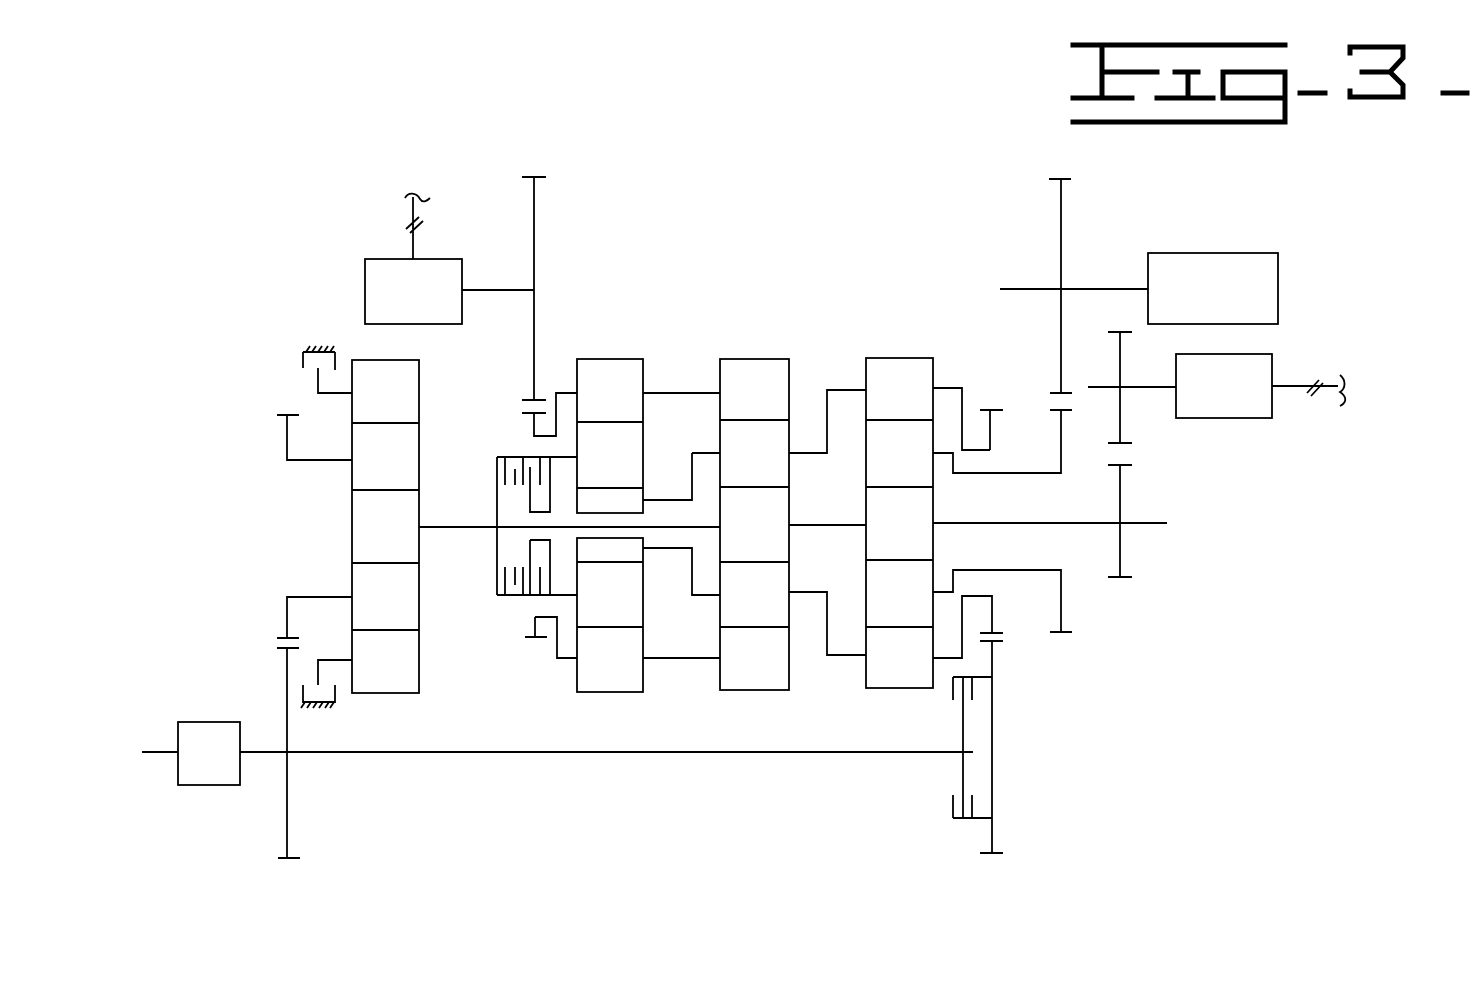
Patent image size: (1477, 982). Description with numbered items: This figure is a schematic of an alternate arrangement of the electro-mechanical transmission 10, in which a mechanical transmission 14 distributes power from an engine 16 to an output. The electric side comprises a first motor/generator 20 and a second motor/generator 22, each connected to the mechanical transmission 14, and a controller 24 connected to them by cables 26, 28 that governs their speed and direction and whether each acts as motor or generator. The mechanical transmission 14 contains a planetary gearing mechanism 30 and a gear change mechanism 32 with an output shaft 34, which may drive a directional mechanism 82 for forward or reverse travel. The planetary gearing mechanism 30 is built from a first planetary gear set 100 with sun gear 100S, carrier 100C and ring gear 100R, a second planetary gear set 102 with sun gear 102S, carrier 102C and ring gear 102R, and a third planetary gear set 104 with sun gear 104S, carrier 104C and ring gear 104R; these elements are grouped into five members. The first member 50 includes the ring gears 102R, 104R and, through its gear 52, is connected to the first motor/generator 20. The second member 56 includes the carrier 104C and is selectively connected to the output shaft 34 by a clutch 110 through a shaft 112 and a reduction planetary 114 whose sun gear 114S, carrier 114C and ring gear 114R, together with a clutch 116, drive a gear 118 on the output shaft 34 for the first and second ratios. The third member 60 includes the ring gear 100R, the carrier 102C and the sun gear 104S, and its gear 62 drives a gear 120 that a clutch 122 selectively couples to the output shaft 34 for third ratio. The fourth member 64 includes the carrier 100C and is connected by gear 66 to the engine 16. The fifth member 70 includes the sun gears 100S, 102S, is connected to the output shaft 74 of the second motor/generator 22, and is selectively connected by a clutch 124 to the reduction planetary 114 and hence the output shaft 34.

The electro-mechanical transmission 10 is at (311, 524).
The mechanical transmission 14 is at (690, 821).
The engine 16 is at (1210, 253).
The first motor/generator 20 is at (368, 259).
The second motor/generator 22 is at (1245, 418).
The controller 24 is at (520, 290).
The cable 26 is at (422, 222).
The cable 28 is at (1322, 383).
The planetary gearing mechanism 30 is at (790, 312).
The gear change mechanism 32 is at (509, 777).
The output shaft 34 is at (600, 752).
The first member 50 is at (557, 393).
The gear 52 is at (523, 408).
The second member 56 is at (534, 413).
The third member 60 is at (955, 388).
The gear 62 is at (992, 428).
The fourth member 64 is at (988, 475).
The gear 66 is at (1062, 447).
The fifth member 70 is at (1053, 523).
The output shaft of the second motor/generator 74 is at (1147, 388).
The directional mechanism 82 is at (205, 722).
The first planetary gear set 100 is at (915, 330).
The carrier 100C is at (866, 592).
The ring gear 100R is at (895, 690).
The sun gear 100S is at (935, 538).
The second planetary gear set 102 is at (750, 311).
The carrier 102C is at (790, 435).
The ring gear 102R is at (789, 362).
The sun gear 102S is at (822, 490).
The third planetary gear set 104 is at (634, 314).
The carrier 104C is at (640, 452).
The ring gear 104R is at (643, 360).
The sun gear 104S is at (637, 502).
The clutch 110 is at (548, 457).
The shaft 112 is at (473, 497).
The reduction planetary 114 is at (417, 774).
The carrier 114C is at (347, 612).
The ring gear 114R is at (353, 698).
The sun gear 114S is at (538, 527).
The clutch 116 is at (302, 362).
The gear 118 is at (285, 680).
The gear 120 is at (995, 655).
The clutch 122 is at (950, 808).
The clutch 124 is at (497, 463).